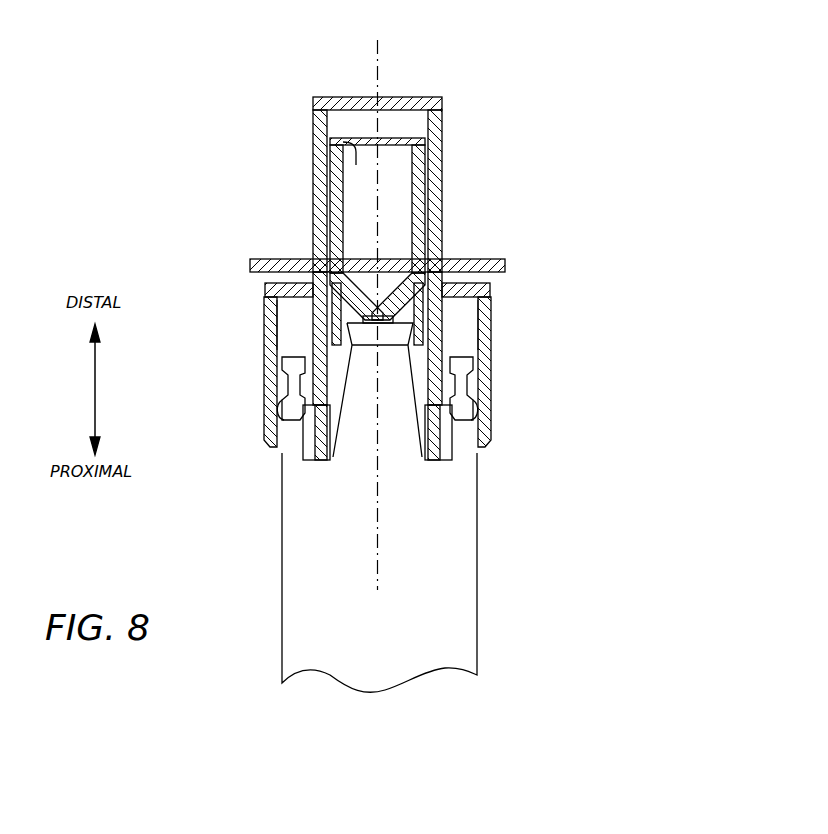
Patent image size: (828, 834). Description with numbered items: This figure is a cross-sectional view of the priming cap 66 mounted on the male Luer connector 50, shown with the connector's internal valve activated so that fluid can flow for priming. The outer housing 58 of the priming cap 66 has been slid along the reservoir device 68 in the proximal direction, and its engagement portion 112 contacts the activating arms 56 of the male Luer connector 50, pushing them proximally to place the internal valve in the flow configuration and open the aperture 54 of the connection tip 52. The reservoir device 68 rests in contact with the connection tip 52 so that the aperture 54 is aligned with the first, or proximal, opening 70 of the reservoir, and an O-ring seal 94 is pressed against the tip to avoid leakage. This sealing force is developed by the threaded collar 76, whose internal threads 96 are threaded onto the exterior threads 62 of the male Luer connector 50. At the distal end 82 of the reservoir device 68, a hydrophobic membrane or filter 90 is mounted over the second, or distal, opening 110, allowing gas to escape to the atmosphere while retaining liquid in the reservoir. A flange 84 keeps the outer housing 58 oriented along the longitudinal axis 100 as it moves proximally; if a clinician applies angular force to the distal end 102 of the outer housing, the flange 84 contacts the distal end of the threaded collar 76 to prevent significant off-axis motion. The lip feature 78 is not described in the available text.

The male Luer connector 50 is at (282, 528).
The connection tip 52 is at (332, 355).
The aperture 54 is at (368, 345).
The activating arms 56 is at (340, 440).
The outer housing 58 is at (444, 106).
The exterior threads 62 is at (276, 421).
The priming cap 66 is at (598, 172).
The reservoir device 68 is at (430, 168).
The first opening 70 is at (376, 305).
The threaded collar 76 is at (492, 326).
The lips 78 is at (266, 292).
The distal end 82 is at (442, 140).
The flange 84 is at (506, 264).
The hydrophobic membrane or filter 90 is at (376, 150).
The O-ring seal 94 is at (400, 340).
The internal threads 96 is at (274, 402).
The longitudinal axis 100 is at (378, 548).
The distal end 102 is at (402, 106).
The second opening 110 is at (347, 163).
The engagement portion 112 is at (292, 296).